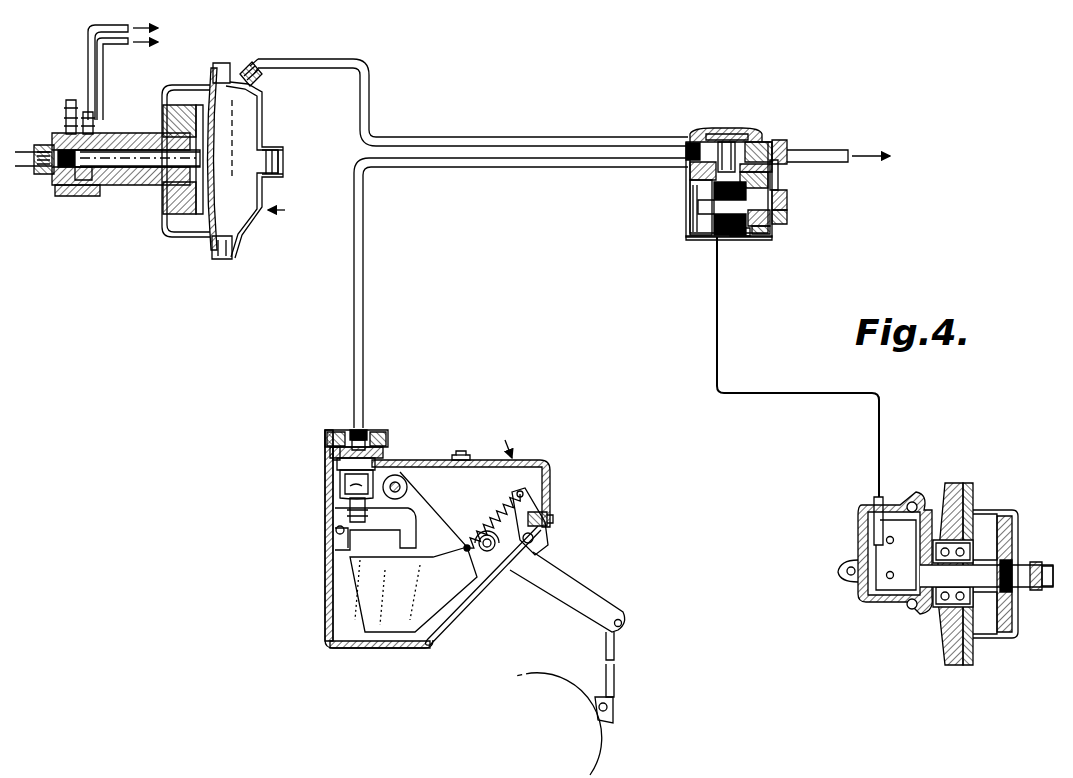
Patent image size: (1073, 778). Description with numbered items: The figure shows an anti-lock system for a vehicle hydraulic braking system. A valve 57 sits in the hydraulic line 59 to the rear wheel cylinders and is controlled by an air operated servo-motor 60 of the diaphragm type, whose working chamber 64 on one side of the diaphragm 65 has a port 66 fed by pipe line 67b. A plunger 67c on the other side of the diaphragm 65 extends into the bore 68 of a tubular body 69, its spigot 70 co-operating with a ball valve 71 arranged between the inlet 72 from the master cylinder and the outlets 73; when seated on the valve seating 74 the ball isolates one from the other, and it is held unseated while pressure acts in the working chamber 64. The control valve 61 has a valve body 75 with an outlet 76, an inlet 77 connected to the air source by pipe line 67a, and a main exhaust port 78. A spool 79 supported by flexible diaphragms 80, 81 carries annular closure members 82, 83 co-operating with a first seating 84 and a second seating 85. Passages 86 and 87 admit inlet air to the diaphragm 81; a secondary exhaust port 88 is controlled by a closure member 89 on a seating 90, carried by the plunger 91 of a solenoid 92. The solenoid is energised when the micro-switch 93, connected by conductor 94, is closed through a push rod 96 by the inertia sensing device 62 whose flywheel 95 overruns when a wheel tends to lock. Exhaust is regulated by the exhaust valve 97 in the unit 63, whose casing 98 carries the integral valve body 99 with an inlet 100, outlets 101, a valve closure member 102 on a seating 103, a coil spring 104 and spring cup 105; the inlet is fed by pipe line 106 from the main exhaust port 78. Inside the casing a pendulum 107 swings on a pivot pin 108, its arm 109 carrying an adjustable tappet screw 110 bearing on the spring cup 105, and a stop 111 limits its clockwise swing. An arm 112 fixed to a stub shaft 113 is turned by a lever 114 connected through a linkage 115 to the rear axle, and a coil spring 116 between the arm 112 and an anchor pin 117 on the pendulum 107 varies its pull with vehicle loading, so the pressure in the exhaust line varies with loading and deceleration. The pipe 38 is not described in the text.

The outlet pipe 38 is at (90, 32).
The hydraulic line 59 is at (110, 42).
The valve 57 is at (36, 176).
The servo-motor 60 is at (235, 161).
The control valve 61 is at (758, 240).
The inertia sensing device 62 is at (990, 508).
The unit 63 is at (437, 537).
The working chamber 64 is at (248, 118).
The diaphragm 65 is at (209, 106).
The port 66 is at (245, 70).
The pipe line 67a is at (850, 139).
The pipe line 67b is at (455, 132).
The plunger 67c is at (128, 168).
The bore 68 is at (84, 182).
The tubular body 69 is at (132, 134).
The spigot 70 is at (70, 168).
The ball valve 71 is at (68, 134).
The inlet 72 is at (40, 143).
The outlets 73 is at (96, 124).
The valve seating 74 is at (60, 188).
The valve body 75 is at (688, 192).
The outlet 76 is at (686, 143).
The inlet 77 is at (786, 147).
The main exhaust port 78 is at (690, 172).
The spool 79 is at (760, 134).
The flexible diaphragm 80 is at (724, 126).
The flexible diaphragm 81 is at (770, 180).
The annular closure member 82 is at (731, 133).
The annular closure member 83 is at (778, 174).
The first seating 84 is at (694, 130).
The second seating 85 is at (774, 166).
The passage 86 is at (789, 196).
The passage 87 is at (762, 235).
The secondary exhaust port 88 is at (745, 238).
The closure member 89 is at (770, 226).
The seating 90 is at (788, 212).
The plunger 91 is at (690, 210).
The solenoid 92 is at (692, 238).
The micro-switch 93 is at (882, 548).
The conductor 94 is at (780, 393).
The flywheel 95 is at (1002, 520).
The push rod 96 is at (893, 594).
The exhaust valve 97 is at (322, 446).
The casing 98 is at (532, 462).
The valve body 99 is at (338, 468).
The inlet 100 is at (363, 428).
The outlets 101 is at (338, 430).
The valve closure member 102 is at (334, 460).
The seating 103 is at (375, 436).
The coil spring 104 is at (345, 480).
The spring cup 105 is at (352, 492).
The pipe line 106 is at (353, 281).
The pendulum 107 is at (348, 598).
The pivot pin 108 is at (398, 483).
The arm 109 is at (354, 508).
The adjustable tappet screw 110 is at (355, 522).
The stop 111 is at (352, 540).
The arm 112 is at (546, 534).
The stub shaft 113 is at (540, 562).
The lever 114 is at (590, 600).
The linkage 115 is at (616, 668).
The coil spring 116 is at (540, 478).
The anchor pin 117 is at (487, 594).